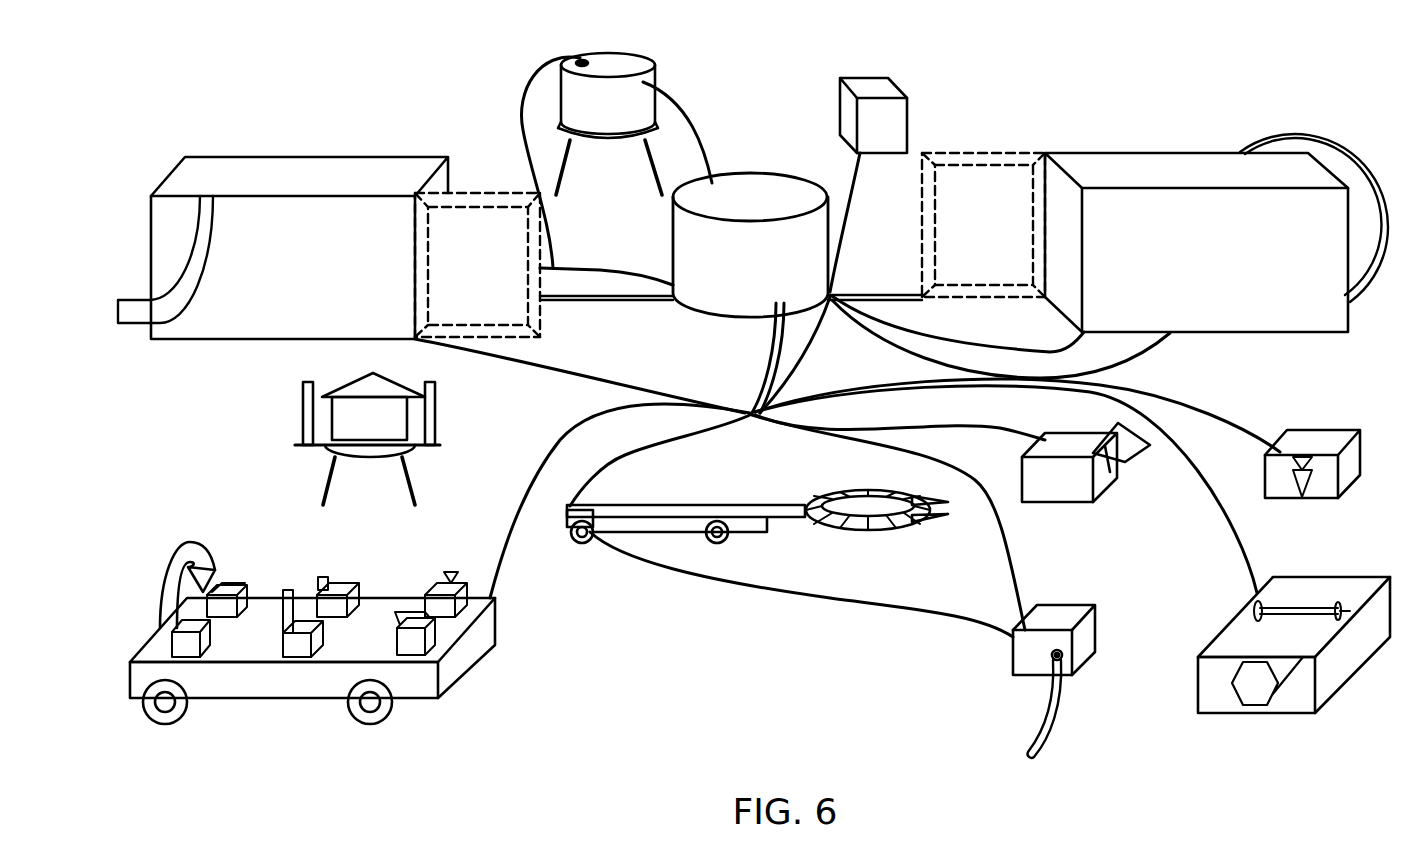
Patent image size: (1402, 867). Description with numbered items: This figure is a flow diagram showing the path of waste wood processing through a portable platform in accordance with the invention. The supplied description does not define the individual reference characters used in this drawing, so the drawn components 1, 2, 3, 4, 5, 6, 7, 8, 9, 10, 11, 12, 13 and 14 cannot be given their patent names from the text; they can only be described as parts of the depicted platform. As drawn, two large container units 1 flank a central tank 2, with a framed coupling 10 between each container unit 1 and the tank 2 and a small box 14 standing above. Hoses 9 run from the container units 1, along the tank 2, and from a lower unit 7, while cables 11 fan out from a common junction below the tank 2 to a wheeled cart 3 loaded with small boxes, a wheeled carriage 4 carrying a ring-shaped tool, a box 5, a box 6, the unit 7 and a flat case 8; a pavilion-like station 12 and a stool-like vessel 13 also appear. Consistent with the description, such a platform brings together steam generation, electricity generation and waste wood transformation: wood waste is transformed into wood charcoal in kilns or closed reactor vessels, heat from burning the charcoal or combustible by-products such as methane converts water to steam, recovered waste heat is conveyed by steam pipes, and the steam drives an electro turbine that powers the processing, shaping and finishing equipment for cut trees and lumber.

The container unit 1 is at (313, 157).
The central tank 2 is at (748, 173).
The transport cart 3 is at (395, 598).
The mobile tool carriage 4 is at (782, 505).
The storage box 5 is at (1065, 502).
The filter unit 6 is at (1320, 430).
The pump unit 7 is at (1030, 675).
The tool case 8 is at (1255, 713).
The hose 9 is at (120, 323).
The coupling frame 10 is at (568, 268).
The cable 11 is at (775, 347).
The pavilion station 12 is at (377, 462).
The stool tank 13 is at (612, 148).
The control box 14 is at (908, 118).